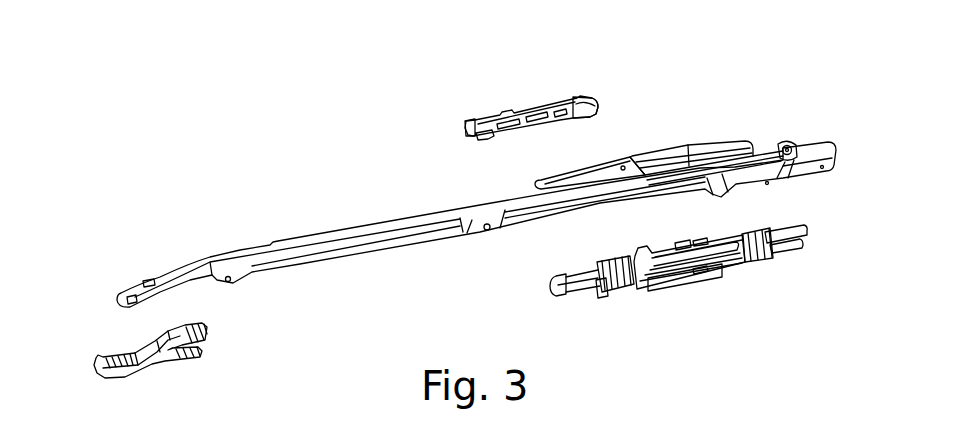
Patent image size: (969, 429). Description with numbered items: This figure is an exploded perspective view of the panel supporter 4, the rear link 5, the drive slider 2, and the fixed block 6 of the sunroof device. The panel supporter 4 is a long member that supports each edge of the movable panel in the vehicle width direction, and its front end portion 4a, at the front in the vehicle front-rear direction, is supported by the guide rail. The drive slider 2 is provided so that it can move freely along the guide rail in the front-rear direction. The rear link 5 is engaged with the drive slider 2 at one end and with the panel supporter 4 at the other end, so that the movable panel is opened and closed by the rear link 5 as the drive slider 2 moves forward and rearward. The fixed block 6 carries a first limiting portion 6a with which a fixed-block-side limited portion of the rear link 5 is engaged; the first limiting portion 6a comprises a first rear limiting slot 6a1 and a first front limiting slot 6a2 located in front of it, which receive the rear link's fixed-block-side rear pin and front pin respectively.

The drive slider 2 is at (687, 284).
The panel supporter 4 is at (318, 236).
The front end portion 4a is at (122, 293).
The rear link 5 is at (663, 150).
The fixed block 6 is at (538, 104).
The first limiting portion 6a is at (484, 74).
The first rear limiting slot 6a1 is at (577, 98).
The first front limiting slot 6a2 is at (470, 122).